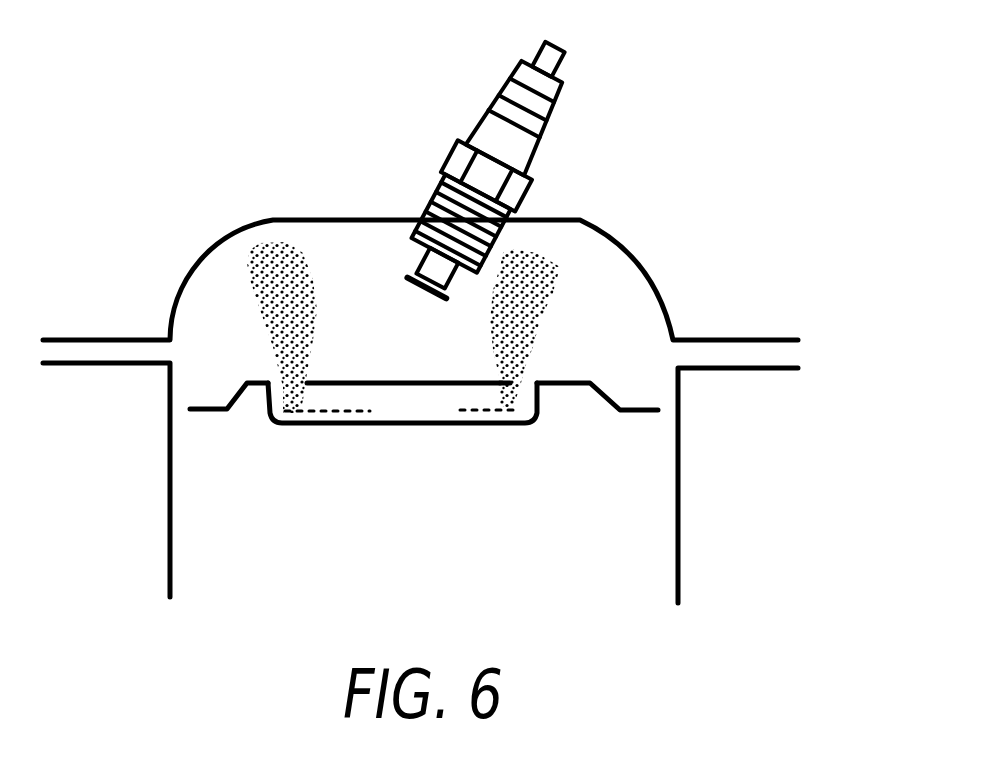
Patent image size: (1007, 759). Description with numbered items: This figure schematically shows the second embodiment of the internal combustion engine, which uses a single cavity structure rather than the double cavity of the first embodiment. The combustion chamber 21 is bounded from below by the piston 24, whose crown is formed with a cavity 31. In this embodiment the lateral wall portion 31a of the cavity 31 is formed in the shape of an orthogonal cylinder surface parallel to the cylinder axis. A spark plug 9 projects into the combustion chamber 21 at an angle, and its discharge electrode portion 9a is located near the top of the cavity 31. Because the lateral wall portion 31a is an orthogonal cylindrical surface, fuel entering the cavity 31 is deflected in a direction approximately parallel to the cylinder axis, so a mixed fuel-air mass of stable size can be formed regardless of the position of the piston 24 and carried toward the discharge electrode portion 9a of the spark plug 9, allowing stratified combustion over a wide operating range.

The spark plug 9 is at (540, 153).
The discharge electrode portion 9a is at (430, 260).
The combustion chamber 21 is at (610, 270).
The piston 24 is at (627, 473).
The cavity 31 is at (350, 397).
The lateral wall portion 31a is at (533, 403).